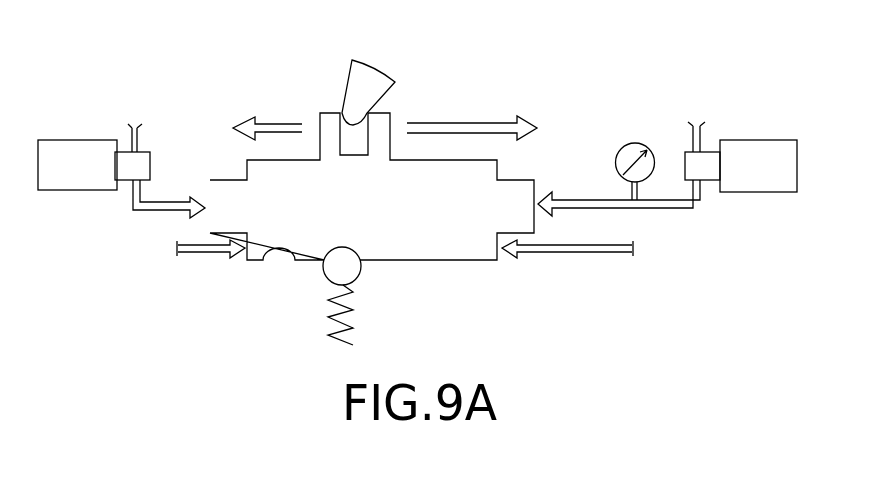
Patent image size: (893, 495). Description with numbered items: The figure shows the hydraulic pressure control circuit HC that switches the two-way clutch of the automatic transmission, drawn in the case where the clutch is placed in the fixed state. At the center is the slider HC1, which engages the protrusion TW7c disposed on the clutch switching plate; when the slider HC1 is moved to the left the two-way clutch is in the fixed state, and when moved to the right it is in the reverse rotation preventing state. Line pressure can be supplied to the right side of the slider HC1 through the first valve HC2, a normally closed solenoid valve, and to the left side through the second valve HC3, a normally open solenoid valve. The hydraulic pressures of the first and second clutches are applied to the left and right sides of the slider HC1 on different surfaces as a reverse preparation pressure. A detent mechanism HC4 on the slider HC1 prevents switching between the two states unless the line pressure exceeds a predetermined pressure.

The hydraulic pressure control circuit HC is at (577, 50).
The slider HC1 is at (390, 218).
The first valve HC2 is at (775, 175).
The second valve HC3 is at (95, 175).
The detent mechanism HC4 is at (352, 275).
The protrusion TW7c is at (355, 80).